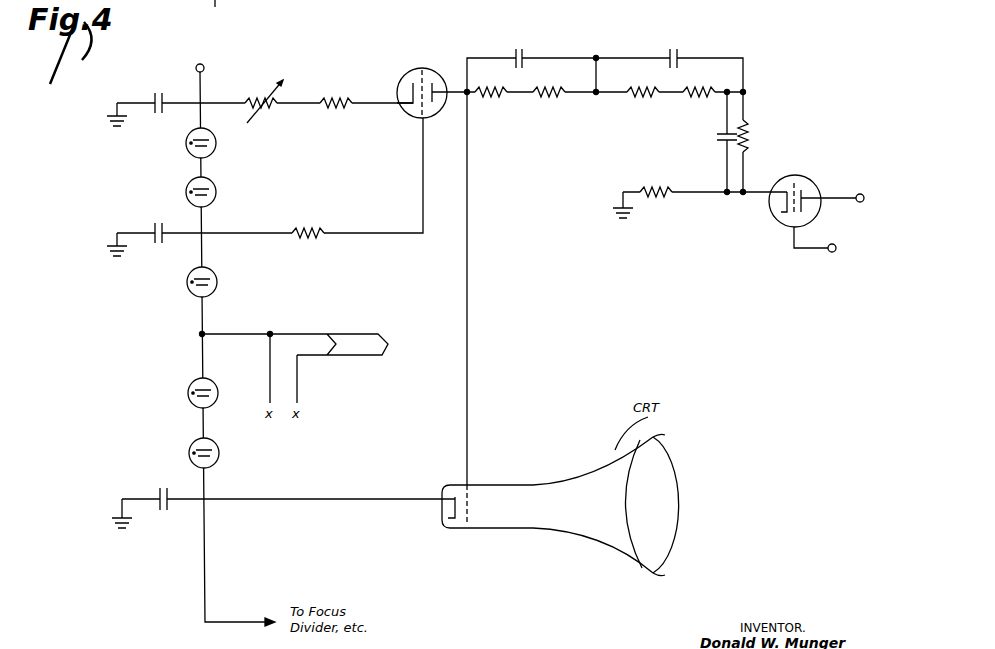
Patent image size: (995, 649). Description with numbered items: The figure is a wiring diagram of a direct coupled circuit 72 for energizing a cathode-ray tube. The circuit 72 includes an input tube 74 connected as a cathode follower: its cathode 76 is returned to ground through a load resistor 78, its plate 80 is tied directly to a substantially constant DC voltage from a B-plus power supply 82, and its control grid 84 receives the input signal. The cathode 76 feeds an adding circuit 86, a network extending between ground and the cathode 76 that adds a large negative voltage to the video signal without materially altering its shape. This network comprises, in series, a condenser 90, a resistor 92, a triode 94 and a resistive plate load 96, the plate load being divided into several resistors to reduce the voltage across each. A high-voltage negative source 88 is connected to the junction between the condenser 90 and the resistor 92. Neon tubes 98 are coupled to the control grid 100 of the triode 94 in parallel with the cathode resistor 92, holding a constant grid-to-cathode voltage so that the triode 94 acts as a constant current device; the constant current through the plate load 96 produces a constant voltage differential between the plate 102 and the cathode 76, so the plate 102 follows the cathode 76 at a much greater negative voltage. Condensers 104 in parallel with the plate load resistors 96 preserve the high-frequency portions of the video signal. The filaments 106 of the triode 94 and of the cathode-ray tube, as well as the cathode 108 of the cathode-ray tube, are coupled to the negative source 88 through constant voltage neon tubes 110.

The circuit 72 is at (187, 375).
The input tube 74 is at (806, 201).
The cathode 76 is at (787, 200).
The load resistor 78 is at (656, 177).
The plate 80 is at (812, 212).
The B-plus power supply 82 is at (860, 190).
The control grid 84 is at (782, 213).
The adding circuit 86 is at (503, 108).
The negative source 88 is at (204, 66).
The condenser 90 is at (155, 97).
The resistor 92 is at (287, 107).
The triode 94 is at (405, 118).
The resistive plate load 96 is at (650, 98).
The neon tubes 98 is at (214, 150).
The control grid 100 is at (423, 108).
The plate 102 is at (420, 95).
The condensers 104 is at (682, 50).
The filaments 106 is at (340, 340).
The cathode 108 is at (450, 515).
The neon tubes 110 is at (217, 280).